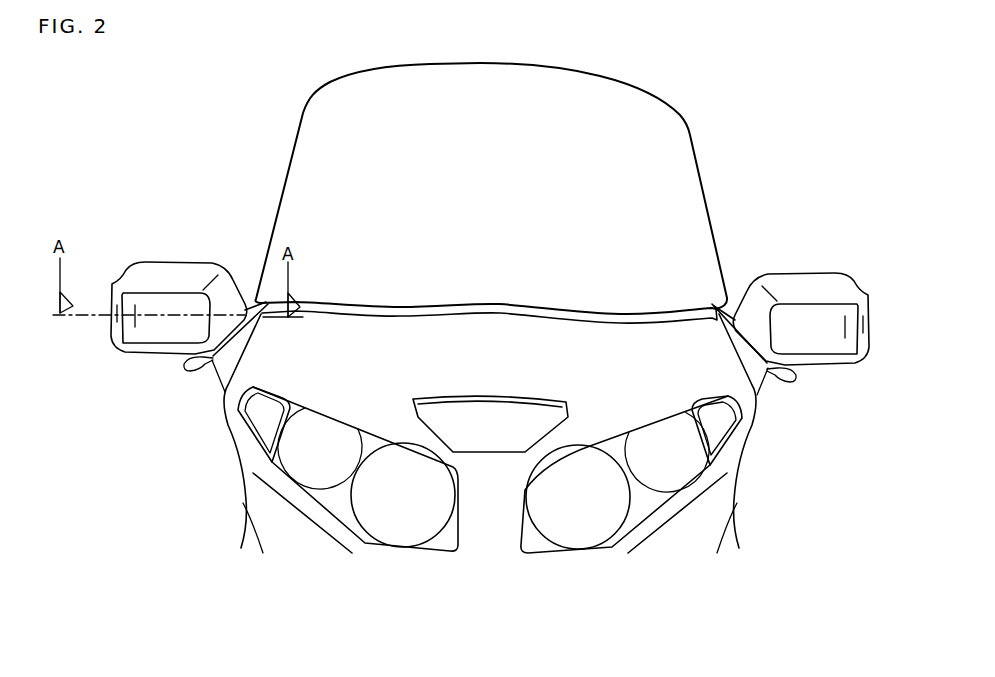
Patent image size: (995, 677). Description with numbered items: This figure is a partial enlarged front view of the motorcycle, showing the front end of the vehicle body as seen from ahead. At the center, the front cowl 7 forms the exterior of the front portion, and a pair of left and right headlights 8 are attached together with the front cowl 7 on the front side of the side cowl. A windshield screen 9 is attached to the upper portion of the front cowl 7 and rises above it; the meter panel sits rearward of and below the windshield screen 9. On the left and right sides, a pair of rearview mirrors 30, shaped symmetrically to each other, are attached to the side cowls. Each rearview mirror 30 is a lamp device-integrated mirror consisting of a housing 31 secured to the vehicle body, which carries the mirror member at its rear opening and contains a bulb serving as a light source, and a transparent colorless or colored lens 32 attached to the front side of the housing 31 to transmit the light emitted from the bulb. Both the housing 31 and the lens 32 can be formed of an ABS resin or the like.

The front cowl 7 is at (600, 349).
The headlight 8 is at (396, 548).
The windshield screen 9 is at (327, 132).
The rearview mirror 30 is at (501, 304).
The housing 31 is at (152, 270).
The lens 32 is at (157, 327).